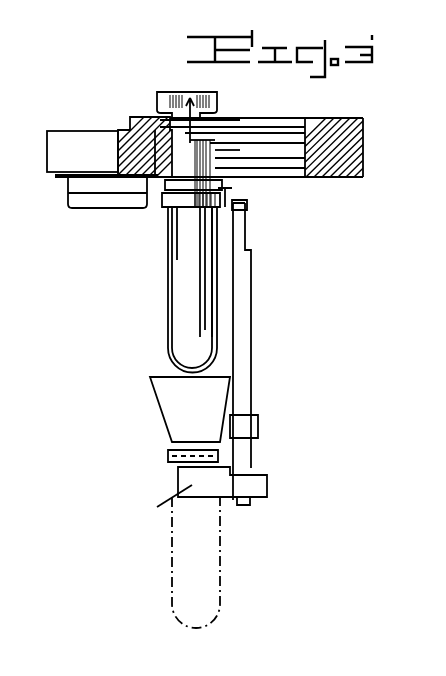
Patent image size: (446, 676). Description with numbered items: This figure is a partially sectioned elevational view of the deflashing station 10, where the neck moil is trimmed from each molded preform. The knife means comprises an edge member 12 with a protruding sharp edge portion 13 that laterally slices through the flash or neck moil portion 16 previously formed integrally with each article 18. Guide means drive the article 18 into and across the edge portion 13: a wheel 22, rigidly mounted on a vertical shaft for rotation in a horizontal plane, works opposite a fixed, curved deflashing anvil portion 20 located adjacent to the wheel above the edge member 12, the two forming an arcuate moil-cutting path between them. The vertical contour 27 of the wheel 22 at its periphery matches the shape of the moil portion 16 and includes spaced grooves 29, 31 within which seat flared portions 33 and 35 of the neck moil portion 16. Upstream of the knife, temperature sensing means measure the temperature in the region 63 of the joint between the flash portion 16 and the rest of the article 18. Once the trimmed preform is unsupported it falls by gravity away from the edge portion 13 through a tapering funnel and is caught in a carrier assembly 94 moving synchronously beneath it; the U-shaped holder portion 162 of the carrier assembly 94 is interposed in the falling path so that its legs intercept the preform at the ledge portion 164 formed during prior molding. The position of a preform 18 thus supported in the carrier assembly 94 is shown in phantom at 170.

The deflashing station 10 is at (334, 264).
The edge member 12 is at (58, 188).
The sharp edge portion 13 is at (160, 190).
The flash or neck moil portion 16 is at (191, 132).
The article 18 is at (162, 292).
The deflashing anvil portion 20 is at (137, 117).
The wheel 22 is at (280, 116).
The vertical contour 27 is at (246, 127).
The groove 29 is at (213, 133).
The groove 31 is at (223, 155).
The flared portion 33 is at (182, 105).
The flared portion 35 is at (192, 238).
The region 63 is at (230, 188).
The carrier assembly 94 is at (306, 393).
The holder portion 162 is at (183, 492).
The ledge portion 164 is at (165, 213).
The phantom position of preform 170 is at (222, 562).